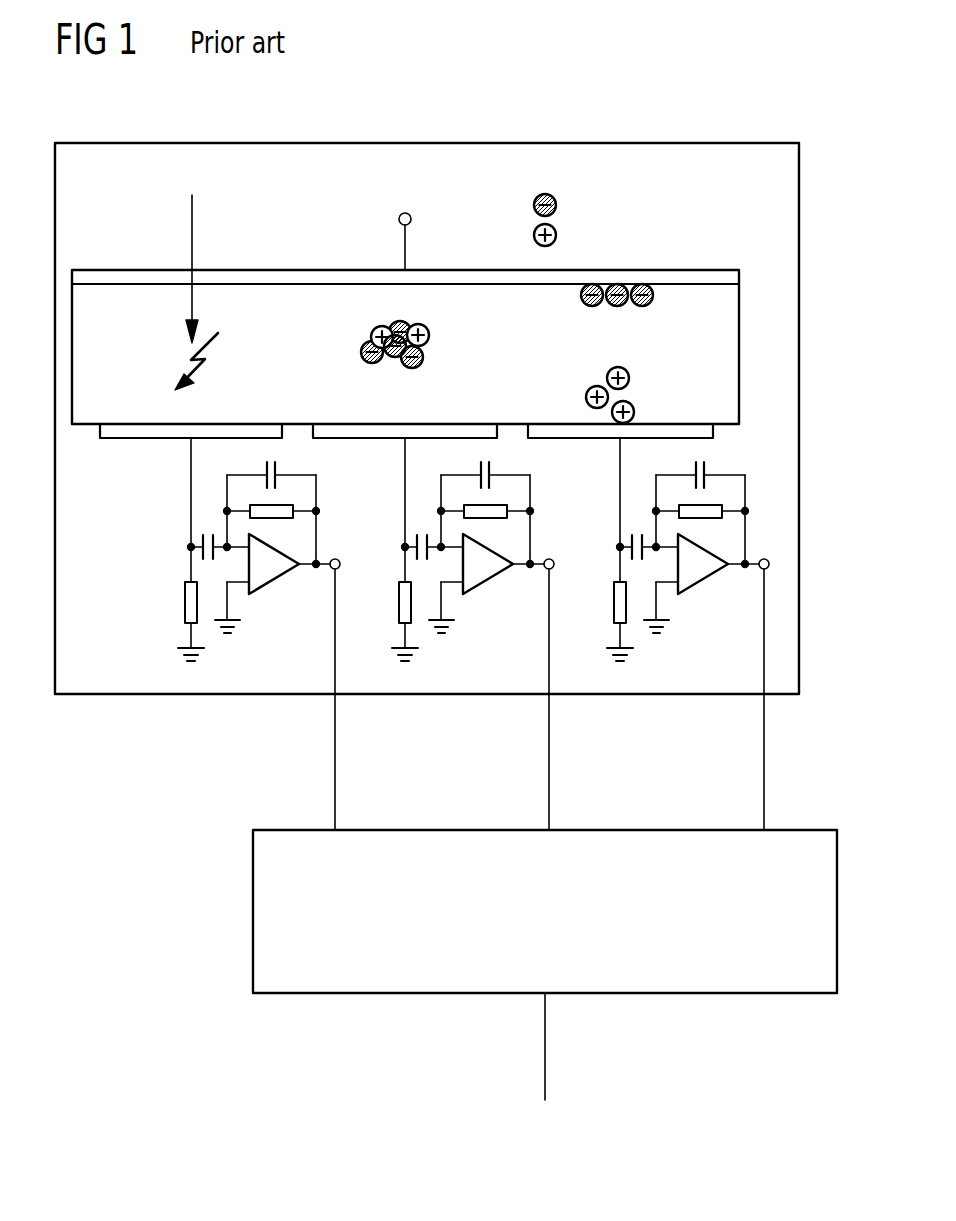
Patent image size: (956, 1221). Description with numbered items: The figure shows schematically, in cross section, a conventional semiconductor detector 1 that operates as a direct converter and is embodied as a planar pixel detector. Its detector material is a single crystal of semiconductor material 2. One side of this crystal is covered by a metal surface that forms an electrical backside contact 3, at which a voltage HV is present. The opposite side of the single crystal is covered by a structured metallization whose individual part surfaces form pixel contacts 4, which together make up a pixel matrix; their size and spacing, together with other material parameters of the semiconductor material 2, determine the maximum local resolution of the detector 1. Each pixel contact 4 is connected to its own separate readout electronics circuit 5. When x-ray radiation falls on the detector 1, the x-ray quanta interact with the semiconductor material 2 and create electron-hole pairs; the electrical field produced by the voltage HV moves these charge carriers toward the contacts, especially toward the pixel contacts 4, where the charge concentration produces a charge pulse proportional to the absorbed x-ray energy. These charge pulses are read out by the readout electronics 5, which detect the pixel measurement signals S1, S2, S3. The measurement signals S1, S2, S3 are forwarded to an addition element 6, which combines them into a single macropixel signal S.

The semiconductor detector 1 is at (728, 115).
The semiconductor material 2 is at (730, 332).
The backside contact 3 is at (288, 277).
The pixel contacts 4 is at (135, 428).
The readout electronics circuits 5 is at (275, 580).
The addition element 6 is at (253, 911).
The voltage HV is at (405, 225).
The measurement signal S1 is at (336, 765).
The measurement signal S2 is at (550, 765).
The measurement signal S3 is at (765, 765).
The macropixel signal S is at (546, 1035).